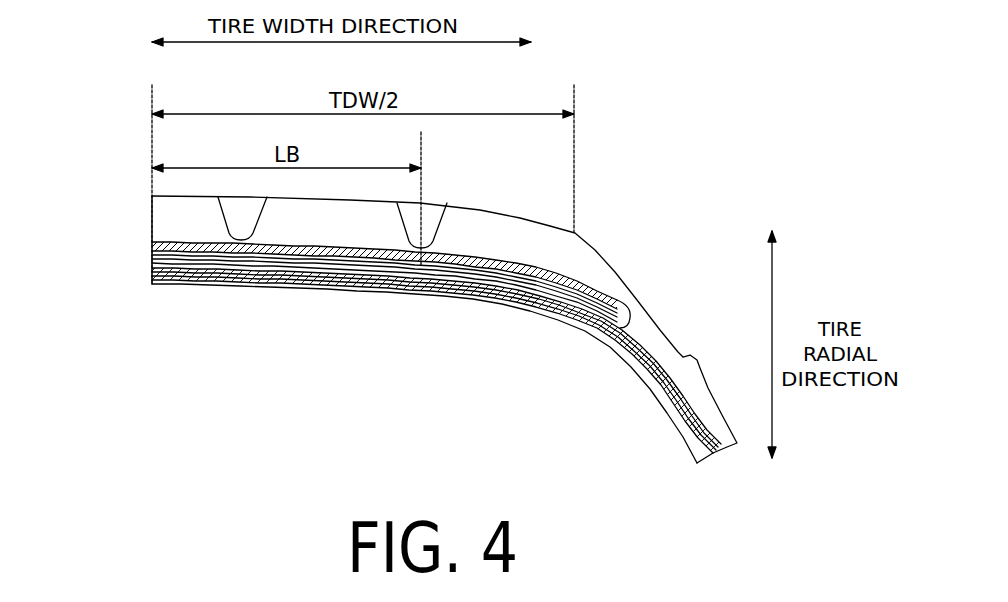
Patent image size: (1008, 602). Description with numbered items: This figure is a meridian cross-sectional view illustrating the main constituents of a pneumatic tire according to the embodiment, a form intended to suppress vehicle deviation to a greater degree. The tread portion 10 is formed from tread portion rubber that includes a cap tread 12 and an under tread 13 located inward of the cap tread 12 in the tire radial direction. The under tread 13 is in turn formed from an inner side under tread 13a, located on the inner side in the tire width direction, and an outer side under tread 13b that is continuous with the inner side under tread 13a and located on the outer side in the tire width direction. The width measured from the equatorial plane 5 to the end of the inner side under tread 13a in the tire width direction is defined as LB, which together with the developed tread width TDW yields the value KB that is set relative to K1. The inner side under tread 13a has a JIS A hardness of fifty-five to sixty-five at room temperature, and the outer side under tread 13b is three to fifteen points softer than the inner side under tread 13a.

The equatorial plane 5 is at (152, 140).
The tread portion 10 is at (90, 218).
The cap tread 12 is at (152, 232).
The under tread 13 is at (152, 247).
The inner side under tread 13a is at (273, 283).
The outer side under tread 13b is at (583, 326).